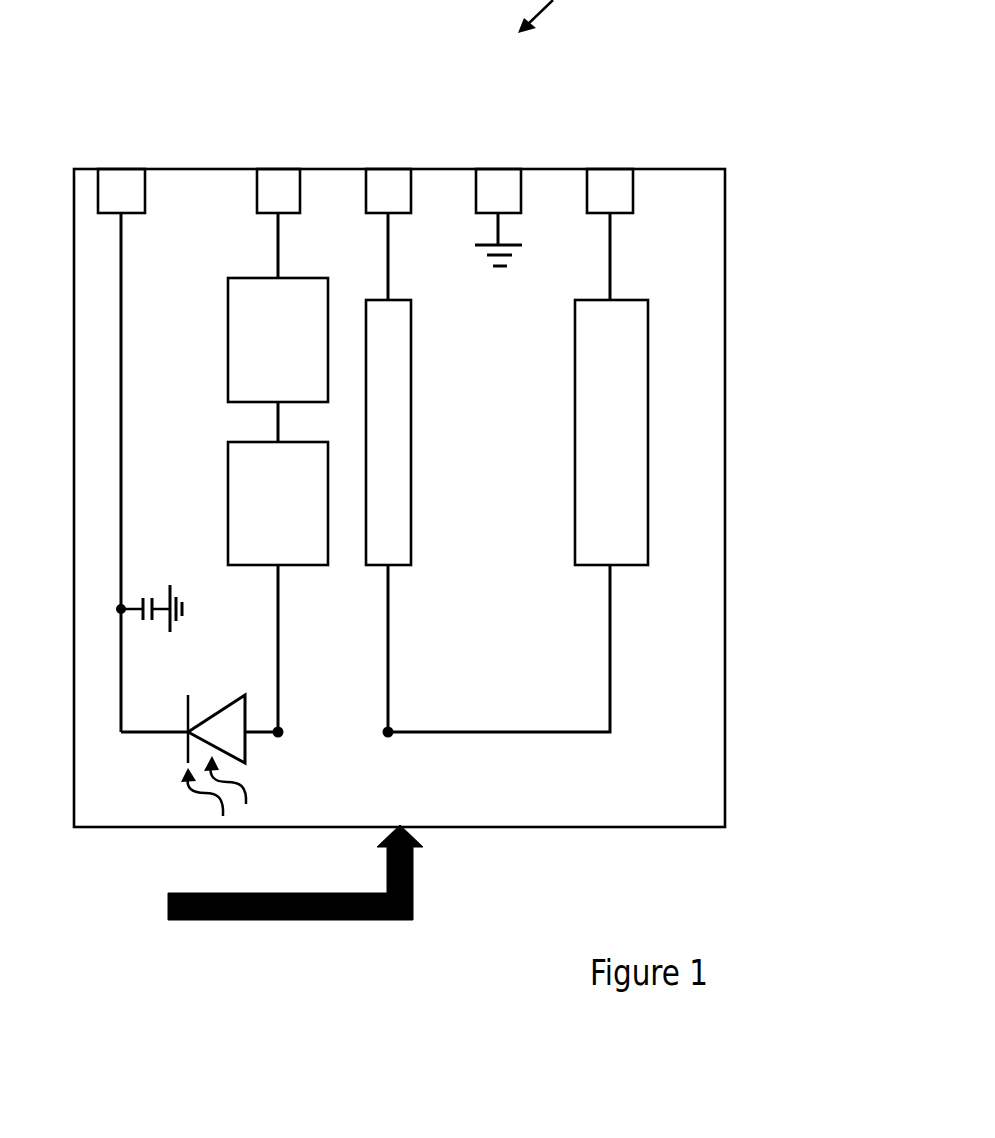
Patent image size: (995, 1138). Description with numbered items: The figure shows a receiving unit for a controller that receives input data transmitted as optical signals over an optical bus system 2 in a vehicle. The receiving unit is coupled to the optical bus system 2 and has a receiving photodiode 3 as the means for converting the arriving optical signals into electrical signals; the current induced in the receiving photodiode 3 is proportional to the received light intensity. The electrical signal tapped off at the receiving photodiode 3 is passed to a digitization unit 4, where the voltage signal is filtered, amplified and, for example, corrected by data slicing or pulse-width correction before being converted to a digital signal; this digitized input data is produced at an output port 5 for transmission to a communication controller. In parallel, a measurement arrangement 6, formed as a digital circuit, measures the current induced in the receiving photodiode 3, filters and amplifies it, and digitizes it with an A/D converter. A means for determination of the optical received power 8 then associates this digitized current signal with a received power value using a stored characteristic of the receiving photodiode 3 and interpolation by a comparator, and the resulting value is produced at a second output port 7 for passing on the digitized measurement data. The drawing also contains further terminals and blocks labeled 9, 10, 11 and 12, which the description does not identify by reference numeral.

The optical bus system 2 is at (417, 898).
The receiving photodiode 3 is at (212, 715).
The digitization unit 4 is at (412, 430).
The output port 5 is at (388, 168).
The measurement arrangement 6 is at (228, 502).
The output port 7 is at (277, 168).
The means for determination of the optical received power 8 is at (228, 338).
The connection terminal 9 is at (120, 168).
The ground terminal 10 is at (500, 168).
The connection terminal 11 is at (610, 168).
The resistor 12 is at (648, 430).